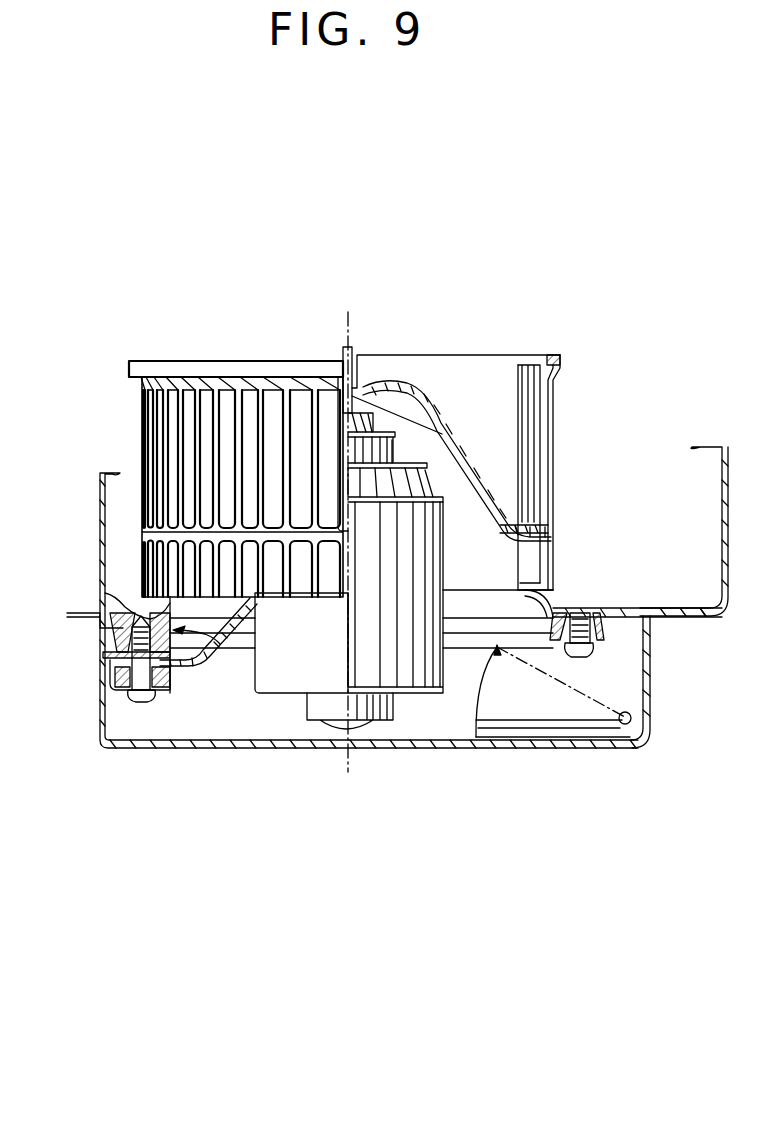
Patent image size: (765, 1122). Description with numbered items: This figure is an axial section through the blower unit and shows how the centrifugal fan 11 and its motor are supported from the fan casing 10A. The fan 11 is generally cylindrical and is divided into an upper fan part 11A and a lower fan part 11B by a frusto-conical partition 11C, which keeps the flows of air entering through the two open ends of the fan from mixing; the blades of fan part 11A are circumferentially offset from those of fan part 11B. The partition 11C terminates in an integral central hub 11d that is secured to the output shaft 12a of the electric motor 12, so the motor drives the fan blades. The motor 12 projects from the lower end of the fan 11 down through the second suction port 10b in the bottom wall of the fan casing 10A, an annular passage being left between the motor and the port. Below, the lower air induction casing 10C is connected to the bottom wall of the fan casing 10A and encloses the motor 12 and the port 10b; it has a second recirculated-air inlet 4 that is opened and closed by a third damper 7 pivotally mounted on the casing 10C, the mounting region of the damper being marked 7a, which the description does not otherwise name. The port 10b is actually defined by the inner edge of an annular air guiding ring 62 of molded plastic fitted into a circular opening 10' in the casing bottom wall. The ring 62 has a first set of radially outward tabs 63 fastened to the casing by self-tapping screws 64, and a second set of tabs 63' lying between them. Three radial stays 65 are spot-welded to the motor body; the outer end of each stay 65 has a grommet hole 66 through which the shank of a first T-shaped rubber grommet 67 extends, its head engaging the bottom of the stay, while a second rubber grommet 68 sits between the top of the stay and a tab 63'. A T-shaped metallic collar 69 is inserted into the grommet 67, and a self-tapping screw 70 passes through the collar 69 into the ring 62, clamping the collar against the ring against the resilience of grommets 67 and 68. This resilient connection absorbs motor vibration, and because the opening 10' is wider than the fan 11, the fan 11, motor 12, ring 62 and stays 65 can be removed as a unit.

The second recirculated-air inlet 4 is at (564, 741).
The third damper 7 is at (517, 727).
The pivot of flap plate 7a is at (632, 725).
The fan casing 10A is at (101, 571).
The second suction port 10b is at (514, 604).
The lower air induction casing 10C is at (650, 666).
The circular opening 10' is at (577, 608).
The centrifugal fan 11 is at (258, 354).
The fan part 11A is at (547, 412).
The fan part 11B is at (547, 550).
The frusto-conical partition 11C is at (550, 517).
The central hub 11d is at (370, 380).
The electric motor 12 is at (412, 683).
The output shaft 12a is at (353, 347).
The annular air guiding ring 62 is at (223, 643).
The tabs 63 is at (600, 642).
The tabs 63' is at (107, 645).
The self-tapping screws 64 is at (582, 655).
The radial stays 65 is at (200, 660).
The grommet hole 66 is at (127, 687).
The first T-shaped grommet 67 is at (115, 677).
The second grommet 68 is at (112, 658).
The T-shaped metallic collar 69 is at (138, 690).
The self-tapping screw 70 is at (143, 693).